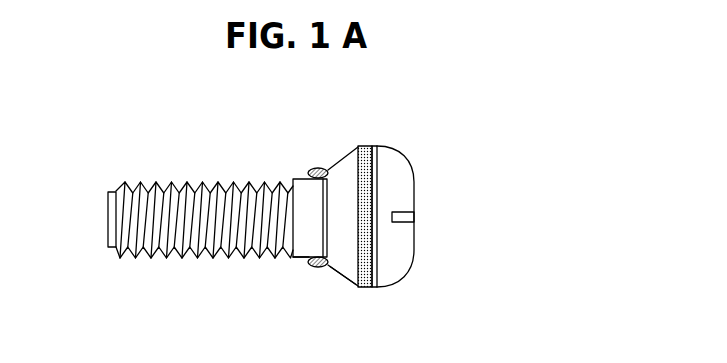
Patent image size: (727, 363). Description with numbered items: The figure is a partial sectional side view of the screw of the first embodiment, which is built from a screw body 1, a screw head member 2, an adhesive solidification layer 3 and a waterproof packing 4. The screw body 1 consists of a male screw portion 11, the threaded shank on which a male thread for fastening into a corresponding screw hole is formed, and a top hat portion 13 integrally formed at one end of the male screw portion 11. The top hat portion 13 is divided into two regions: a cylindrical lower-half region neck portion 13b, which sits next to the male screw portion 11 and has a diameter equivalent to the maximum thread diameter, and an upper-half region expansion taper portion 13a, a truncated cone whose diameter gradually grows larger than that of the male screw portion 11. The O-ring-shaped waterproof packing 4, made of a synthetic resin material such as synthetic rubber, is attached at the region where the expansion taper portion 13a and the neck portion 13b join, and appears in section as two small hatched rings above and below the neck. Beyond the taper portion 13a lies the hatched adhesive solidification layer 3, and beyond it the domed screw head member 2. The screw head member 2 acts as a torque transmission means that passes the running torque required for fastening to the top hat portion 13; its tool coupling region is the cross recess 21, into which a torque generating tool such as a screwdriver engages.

The screw body 1 is at (104, 211).
The male screw portion 11 is at (202, 181).
The top hat portion 13 is at (347, 157).
The upper-half region expansion taper portion 13a is at (344, 274).
The lower-half region neck portion 13b is at (305, 261).
The waterproof packing 4 is at (313, 167).
The adhesive solidification layer 3 is at (367, 146).
The screw head member 2 is at (413, 176).
The cross recess 21 is at (414, 218).